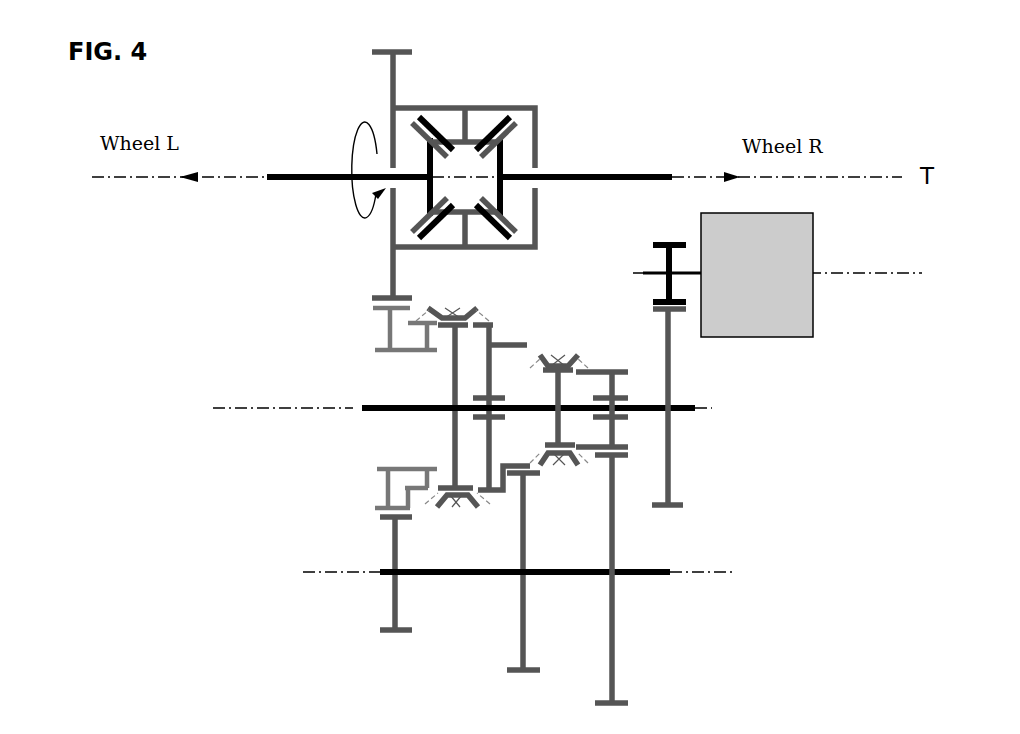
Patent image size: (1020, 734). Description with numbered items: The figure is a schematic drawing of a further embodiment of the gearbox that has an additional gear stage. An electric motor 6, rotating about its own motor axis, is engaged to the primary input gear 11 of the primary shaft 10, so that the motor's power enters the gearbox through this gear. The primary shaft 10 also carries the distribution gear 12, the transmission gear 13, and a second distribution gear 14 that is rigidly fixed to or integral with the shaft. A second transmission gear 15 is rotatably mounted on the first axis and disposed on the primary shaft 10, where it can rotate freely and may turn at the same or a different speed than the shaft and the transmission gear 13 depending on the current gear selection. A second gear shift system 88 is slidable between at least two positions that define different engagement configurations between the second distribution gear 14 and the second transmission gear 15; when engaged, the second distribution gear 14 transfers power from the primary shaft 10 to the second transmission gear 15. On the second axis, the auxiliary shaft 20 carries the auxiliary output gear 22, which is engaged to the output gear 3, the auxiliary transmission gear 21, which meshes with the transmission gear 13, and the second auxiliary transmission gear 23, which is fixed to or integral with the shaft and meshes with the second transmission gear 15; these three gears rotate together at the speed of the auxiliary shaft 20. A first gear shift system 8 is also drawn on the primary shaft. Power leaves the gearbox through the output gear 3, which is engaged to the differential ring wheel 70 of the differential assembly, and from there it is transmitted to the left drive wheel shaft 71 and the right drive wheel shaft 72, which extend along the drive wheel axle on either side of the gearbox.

The output gear 3 is at (383, 492).
The electric motor 6 is at (811, 300).
The synchronizer 8 is at (447, 313).
The primary shaft 10 is at (730, 393).
The primary input gear 11 is at (668, 478).
The distribution gear 12 is at (450, 380).
The transmission gear 13 is at (513, 344).
The second distribution gear 14 is at (557, 430).
The second transmission gear 15 is at (608, 368).
The auxiliary shaft 20 is at (719, 556).
The auxiliary transmission gear 21 is at (522, 648).
The auxiliary output gear 22 is at (393, 613).
The second auxiliary transmission gear 23 is at (605, 684).
The differential ring wheel 70 is at (388, 285).
The left drive wheel shaft 71 is at (297, 175).
The right drive wheel shaft 72 is at (580, 177).
The second gear shift system 88 is at (560, 352).